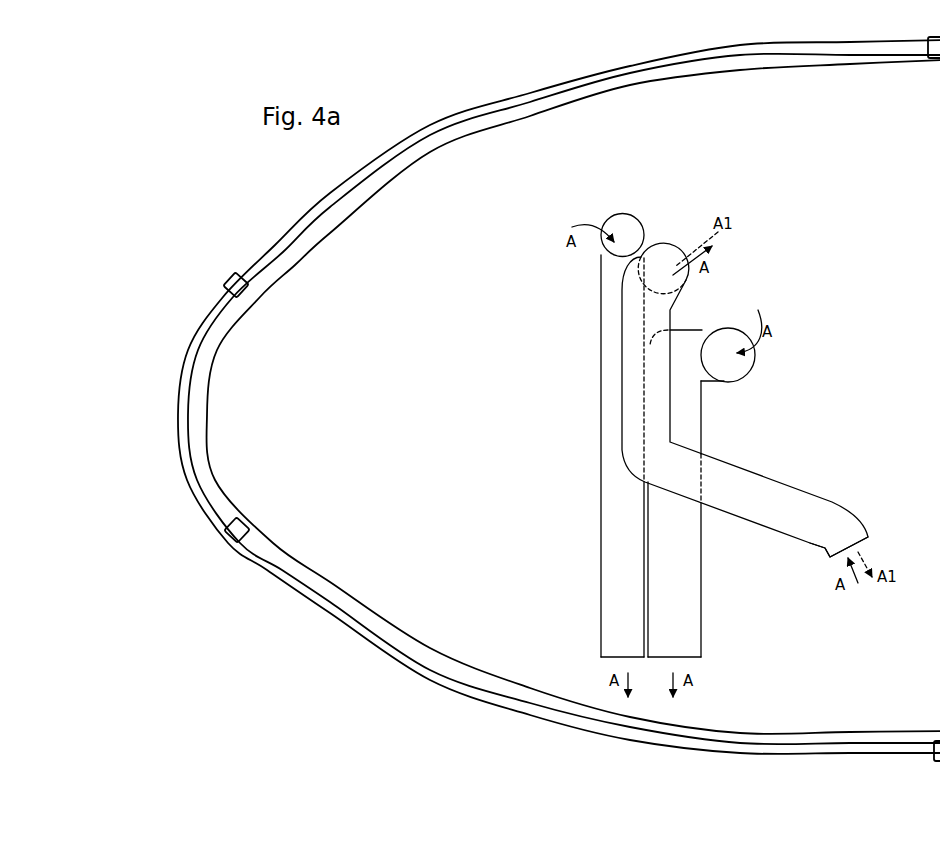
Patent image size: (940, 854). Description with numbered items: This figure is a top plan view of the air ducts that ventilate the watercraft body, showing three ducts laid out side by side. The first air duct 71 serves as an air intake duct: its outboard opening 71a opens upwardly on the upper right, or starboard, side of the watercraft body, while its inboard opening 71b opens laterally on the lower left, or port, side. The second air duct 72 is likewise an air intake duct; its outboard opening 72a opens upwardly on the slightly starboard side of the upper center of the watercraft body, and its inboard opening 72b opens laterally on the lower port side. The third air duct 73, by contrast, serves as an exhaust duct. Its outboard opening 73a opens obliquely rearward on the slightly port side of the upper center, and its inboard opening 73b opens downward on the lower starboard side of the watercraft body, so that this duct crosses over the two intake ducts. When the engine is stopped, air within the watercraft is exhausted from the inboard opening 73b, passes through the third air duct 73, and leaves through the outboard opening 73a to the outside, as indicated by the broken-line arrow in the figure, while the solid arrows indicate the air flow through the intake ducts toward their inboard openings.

The first air duct 71 is at (607, 562).
The outboard opening of the first air duct 71a is at (614, 222).
The inboard opening of the first air duct 71b is at (608, 658).
The second air duct 72 is at (697, 578).
The outboard opening of the second air duct 72a is at (745, 368).
The inboard opening of the second air duct 72b is at (688, 660).
The third air duct 73 is at (790, 492).
The outboard opening of the third air duct 73a is at (863, 542).
The inboard opening of the third air duct 73b is at (666, 263).